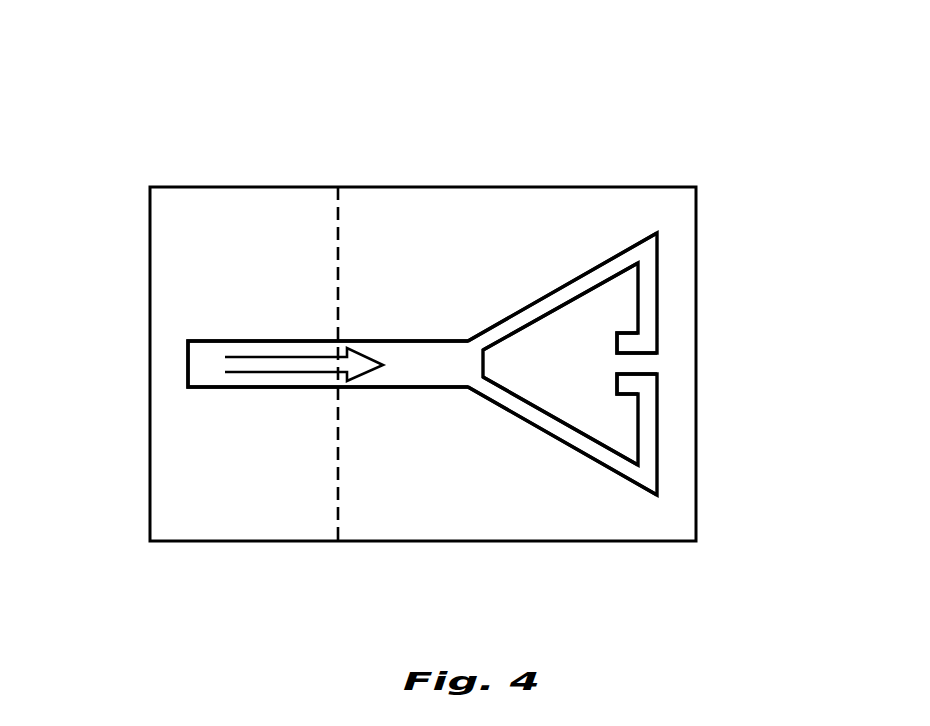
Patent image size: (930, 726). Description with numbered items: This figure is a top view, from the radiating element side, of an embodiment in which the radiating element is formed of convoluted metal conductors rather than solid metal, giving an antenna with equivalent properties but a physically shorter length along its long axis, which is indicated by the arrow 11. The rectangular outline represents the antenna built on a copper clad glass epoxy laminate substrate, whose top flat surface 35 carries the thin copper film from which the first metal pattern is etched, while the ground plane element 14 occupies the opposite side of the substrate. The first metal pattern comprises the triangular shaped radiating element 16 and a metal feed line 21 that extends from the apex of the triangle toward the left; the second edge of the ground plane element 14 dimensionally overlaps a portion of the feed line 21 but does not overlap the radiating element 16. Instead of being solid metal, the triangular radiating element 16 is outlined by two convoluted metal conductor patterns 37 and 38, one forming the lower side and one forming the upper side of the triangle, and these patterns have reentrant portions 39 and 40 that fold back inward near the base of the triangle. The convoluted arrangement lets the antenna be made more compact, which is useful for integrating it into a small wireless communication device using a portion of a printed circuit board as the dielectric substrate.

The ground plane element 14 is at (187, 263).
The top flat surface 35 is at (410, 207).
The radiating element 16 is at (690, 273).
The feed line 21 is at (219, 345).
The arrow 11 is at (298, 357).
The convoluted metal conductor pattern 38 is at (538, 305).
The convoluted metal conductor pattern 37 is at (565, 437).
The reentrant portion 39 is at (628, 343).
The reentrant portion 40 is at (633, 380).